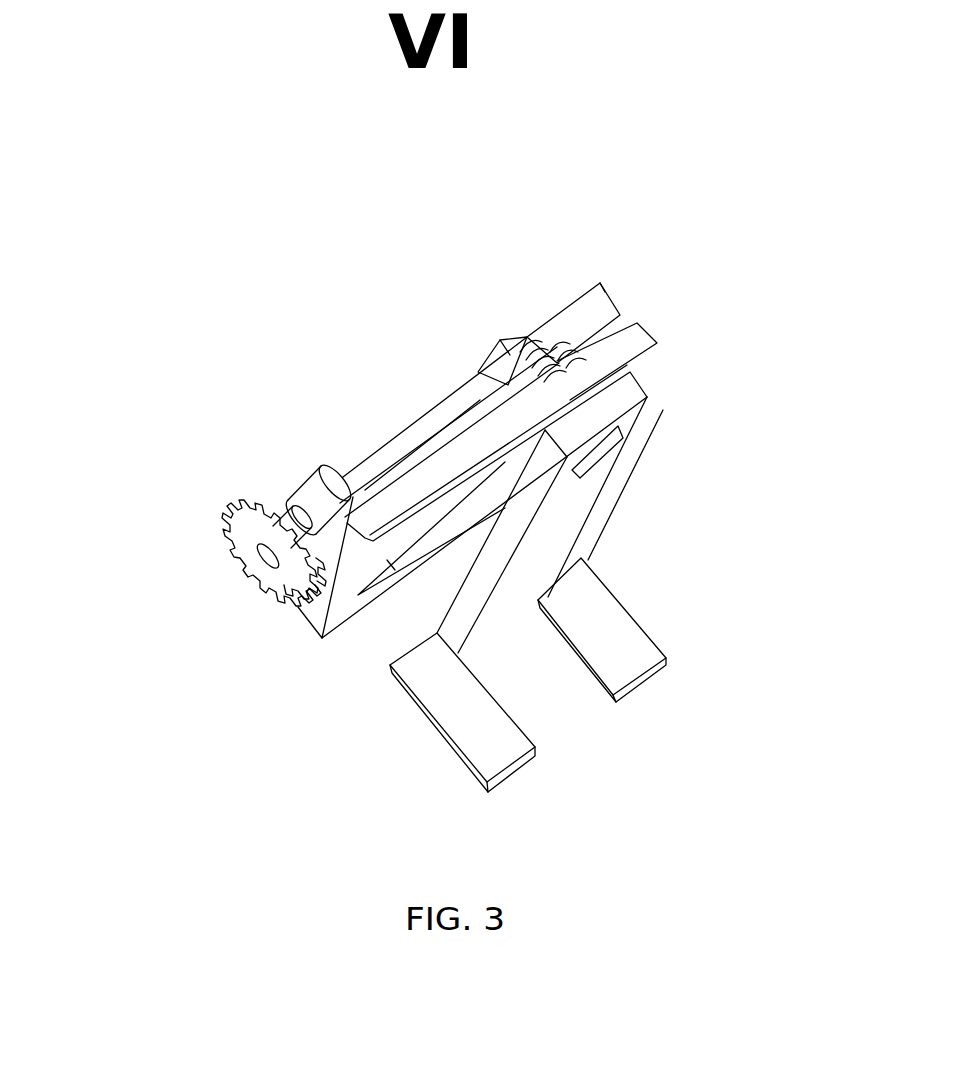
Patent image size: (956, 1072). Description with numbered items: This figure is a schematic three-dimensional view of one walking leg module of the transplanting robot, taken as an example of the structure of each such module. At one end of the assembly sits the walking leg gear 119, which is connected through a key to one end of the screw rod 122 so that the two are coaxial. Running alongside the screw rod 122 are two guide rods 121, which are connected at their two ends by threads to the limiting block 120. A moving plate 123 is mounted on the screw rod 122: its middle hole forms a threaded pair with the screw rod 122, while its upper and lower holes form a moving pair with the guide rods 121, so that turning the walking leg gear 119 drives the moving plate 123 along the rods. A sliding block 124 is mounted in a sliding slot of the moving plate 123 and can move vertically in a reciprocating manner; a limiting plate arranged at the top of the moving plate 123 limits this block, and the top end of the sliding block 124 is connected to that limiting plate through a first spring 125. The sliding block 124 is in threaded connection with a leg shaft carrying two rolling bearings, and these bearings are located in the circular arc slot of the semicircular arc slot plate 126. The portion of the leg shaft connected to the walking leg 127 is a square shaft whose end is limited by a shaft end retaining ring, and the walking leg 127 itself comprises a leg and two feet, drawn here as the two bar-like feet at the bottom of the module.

The walking leg gear 119 is at (199, 453).
The limiting block 120 is at (192, 377).
The guide rods 121 is at (214, 321).
The screw rod 122 is at (423, 312).
The moving plate 123 is at (421, 246).
The sliding block 124 is at (435, 298).
The first spring 125 is at (600, 241).
The semicircular arc slot plate 126 is at (677, 247).
The walking leg 127 is at (563, 514).